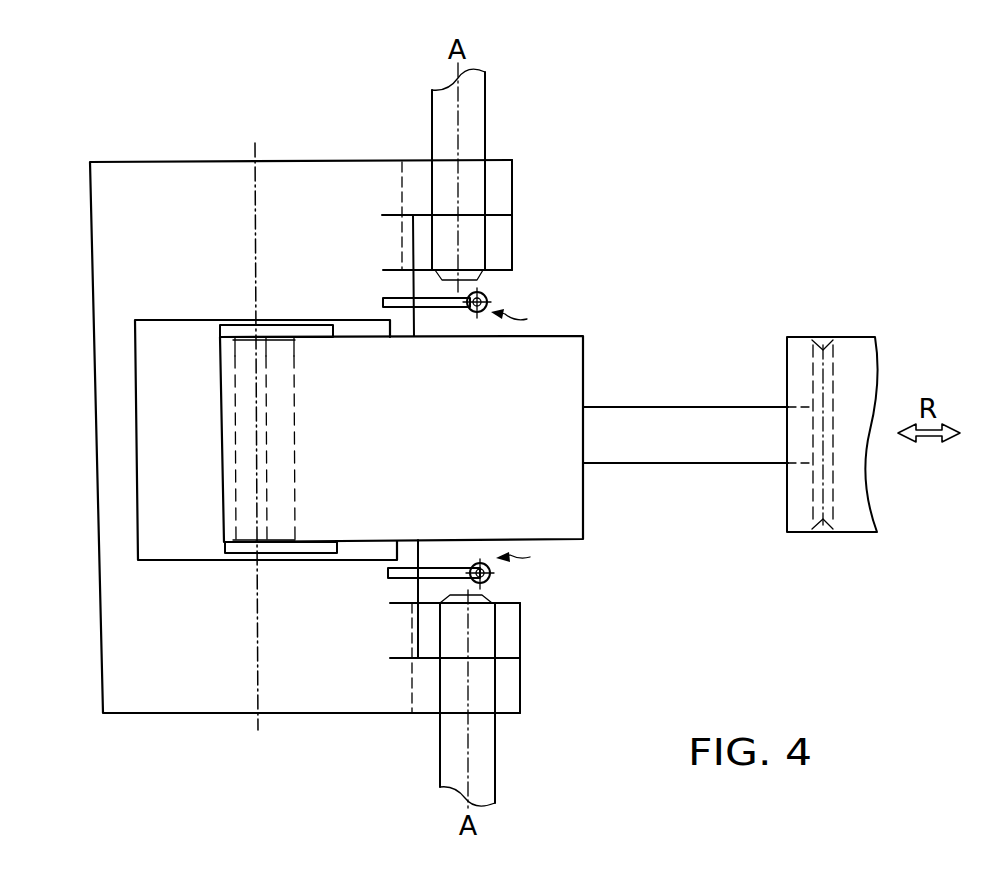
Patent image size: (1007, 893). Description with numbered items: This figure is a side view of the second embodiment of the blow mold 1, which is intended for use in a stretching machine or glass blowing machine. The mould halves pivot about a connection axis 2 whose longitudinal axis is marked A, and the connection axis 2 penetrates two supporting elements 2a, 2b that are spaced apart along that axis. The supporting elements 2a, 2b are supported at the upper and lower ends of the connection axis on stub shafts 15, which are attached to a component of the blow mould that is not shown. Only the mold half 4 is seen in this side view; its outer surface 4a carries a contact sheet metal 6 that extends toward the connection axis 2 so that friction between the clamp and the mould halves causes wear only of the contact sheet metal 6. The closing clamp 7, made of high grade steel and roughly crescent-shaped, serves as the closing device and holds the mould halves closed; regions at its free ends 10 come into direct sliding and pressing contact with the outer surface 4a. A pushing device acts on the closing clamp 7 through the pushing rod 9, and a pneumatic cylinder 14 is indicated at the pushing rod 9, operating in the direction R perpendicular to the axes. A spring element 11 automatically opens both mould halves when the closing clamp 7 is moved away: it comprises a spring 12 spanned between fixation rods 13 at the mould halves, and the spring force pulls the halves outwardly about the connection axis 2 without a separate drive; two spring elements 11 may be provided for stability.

The blow mold 1 is at (90, 114).
The connection axis 2 is at (472, 132).
The supporting element 2a is at (500, 187).
The supporting element 2b is at (508, 688).
The mold half 4 is at (189, 188).
The outer surface 4a is at (298, 175).
The guide box 6 is at (148, 405).
The closing clamp 7 is at (560, 355).
The pushing rod 9 is at (655, 420).
The free ends 10 is at (280, 458).
The spring element 11 is at (525, 437).
The spring 12 is at (487, 297).
The fixation rods 13 is at (395, 298).
The pneumatic cylinder 14 is at (855, 345).
The stub shafts 15 is at (432, 118).